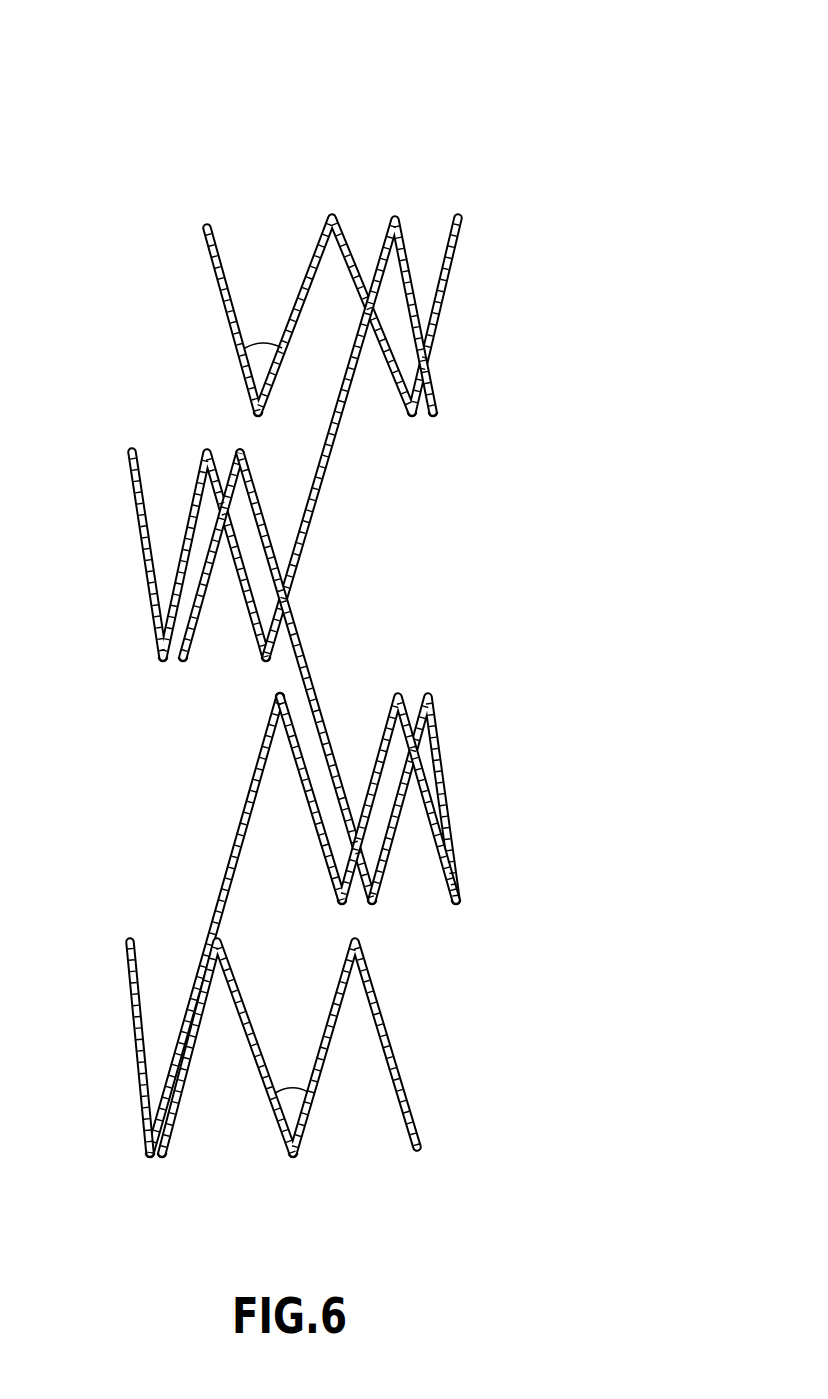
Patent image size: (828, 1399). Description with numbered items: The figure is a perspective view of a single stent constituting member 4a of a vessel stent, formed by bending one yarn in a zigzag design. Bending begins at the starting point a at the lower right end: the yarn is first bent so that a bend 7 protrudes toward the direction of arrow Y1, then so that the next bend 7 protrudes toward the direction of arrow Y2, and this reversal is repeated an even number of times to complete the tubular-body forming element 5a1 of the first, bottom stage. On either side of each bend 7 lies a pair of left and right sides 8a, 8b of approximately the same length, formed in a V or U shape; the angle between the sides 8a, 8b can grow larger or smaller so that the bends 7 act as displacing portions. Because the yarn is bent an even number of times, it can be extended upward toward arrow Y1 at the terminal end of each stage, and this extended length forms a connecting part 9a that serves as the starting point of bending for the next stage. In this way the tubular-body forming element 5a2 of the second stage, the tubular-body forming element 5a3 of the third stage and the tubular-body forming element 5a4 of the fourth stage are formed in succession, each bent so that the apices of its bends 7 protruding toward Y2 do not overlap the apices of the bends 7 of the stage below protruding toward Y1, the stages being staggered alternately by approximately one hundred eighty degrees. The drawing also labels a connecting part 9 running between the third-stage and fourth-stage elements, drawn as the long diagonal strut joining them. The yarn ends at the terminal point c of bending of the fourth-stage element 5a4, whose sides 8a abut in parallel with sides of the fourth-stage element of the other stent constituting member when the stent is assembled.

The stent constituting member 4a is at (412, 78).
The tubular-body forming element of the first stage 5a1 is at (130, 986).
The tubular-body forming element of the second stage 5a2 is at (442, 725).
The tubular-body forming element of the third stage 5a3 is at (148, 553).
The tubular-body forming element of the fourth stage 5a4 is at (455, 300).
The bend 7 is at (248, 412).
The side 8a is at (350, 258).
The side 8b is at (307, 250).
The connecting strut 9 is at (340, 470).
The connecting part 9a is at (306, 668).
The terminal point of bending c is at (208, 226).
The starting point of bending a is at (418, 1150).
The arrow Y1 direction Y1 is at (708, 295).
The arrow Y2 direction Y2 is at (703, 1073).